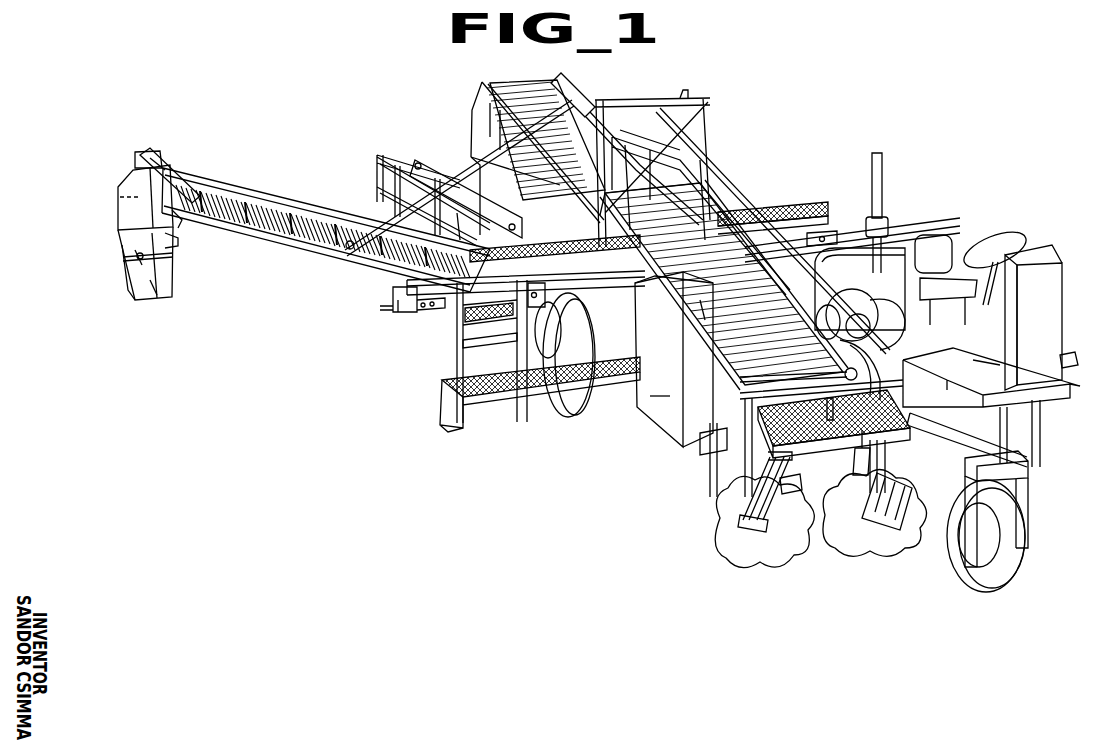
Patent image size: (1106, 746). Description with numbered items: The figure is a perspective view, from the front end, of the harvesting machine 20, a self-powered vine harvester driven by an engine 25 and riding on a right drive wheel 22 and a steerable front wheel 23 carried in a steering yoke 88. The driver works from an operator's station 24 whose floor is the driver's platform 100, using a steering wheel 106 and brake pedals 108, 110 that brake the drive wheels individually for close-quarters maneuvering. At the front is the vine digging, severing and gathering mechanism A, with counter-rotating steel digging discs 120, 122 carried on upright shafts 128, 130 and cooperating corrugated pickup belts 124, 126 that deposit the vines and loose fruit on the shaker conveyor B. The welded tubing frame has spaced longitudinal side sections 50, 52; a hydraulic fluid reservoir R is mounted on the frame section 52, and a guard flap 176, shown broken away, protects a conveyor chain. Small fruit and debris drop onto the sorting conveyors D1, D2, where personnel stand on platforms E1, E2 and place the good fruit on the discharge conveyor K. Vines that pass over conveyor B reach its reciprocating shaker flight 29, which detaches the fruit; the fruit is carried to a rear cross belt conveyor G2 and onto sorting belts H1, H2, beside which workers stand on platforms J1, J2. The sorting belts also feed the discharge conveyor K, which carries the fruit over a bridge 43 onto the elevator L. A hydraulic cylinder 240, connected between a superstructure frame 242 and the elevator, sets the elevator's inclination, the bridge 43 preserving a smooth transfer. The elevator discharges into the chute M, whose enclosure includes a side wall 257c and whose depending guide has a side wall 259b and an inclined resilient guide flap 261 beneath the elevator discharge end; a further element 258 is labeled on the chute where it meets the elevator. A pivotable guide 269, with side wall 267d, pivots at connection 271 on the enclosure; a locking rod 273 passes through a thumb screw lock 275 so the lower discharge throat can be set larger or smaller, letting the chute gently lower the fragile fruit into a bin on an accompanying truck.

The harvesting machine 20 is at (372, 110).
The elevator L is at (272, 185).
The bracket 258 is at (152, 160).
The side wall 257c is at (133, 207).
The discharge chute M is at (118, 221).
The thumb screw lock 275 is at (140, 254).
The locking rod 273 is at (138, 268).
The pivotable guide 269 is at (147, 283).
The side wall 267d is at (157, 293).
The resilient guide flap 261 is at (180, 220).
The pivot connection 271 is at (173, 240).
The side wall 259b is at (170, 273).
The platform J2 is at (370, 172).
The sorting belt H2 is at (443, 152).
The rear cross belt conveyor G2 is at (470, 150).
The frame side section 52 is at (472, 150).
The shaker conveyor B is at (533, 83).
The shaker flight 29 is at (557, 82).
The hydraulic cylinder 240 is at (575, 108).
The superstructure frame 242 is at (685, 98).
The platform J1 is at (662, 142).
The sorting belt H1 is at (717, 170).
The discharge conveyor K is at (557, 232).
The sorting conveyor D1 is at (849, 240).
The engine 25 is at (890, 263).
The steering wheel 106 is at (993, 240).
The operator's station 24 is at (1032, 240).
The bridge 43 is at (403, 265).
The sorting conveyor D2 is at (405, 300).
The platform E2 is at (437, 378).
The drive wheel 22 is at (578, 408).
The guard flap 176 is at (698, 338).
The hydraulic fluid reservoir R is at (660, 384).
The platform E1 is at (820, 332).
The frame side section 50 is at (860, 241).
The driver's platform 100 is at (953, 363).
The brake pedal 110 is at (1073, 360).
The brake pedal 108 is at (973, 370).
The upright shaft 128 is at (866, 462).
The steering yoke 88 is at (1027, 487).
The upright shaft 130 is at (790, 481).
The digging disc 122 is at (720, 523).
The pickup belt 126 is at (757, 550).
The vine digging, severing and gathering mechanism A is at (783, 572).
The digging disc 120 is at (853, 540).
The pickup belt 124 is at (897, 523).
The steerable front wheel 23 is at (977, 573).